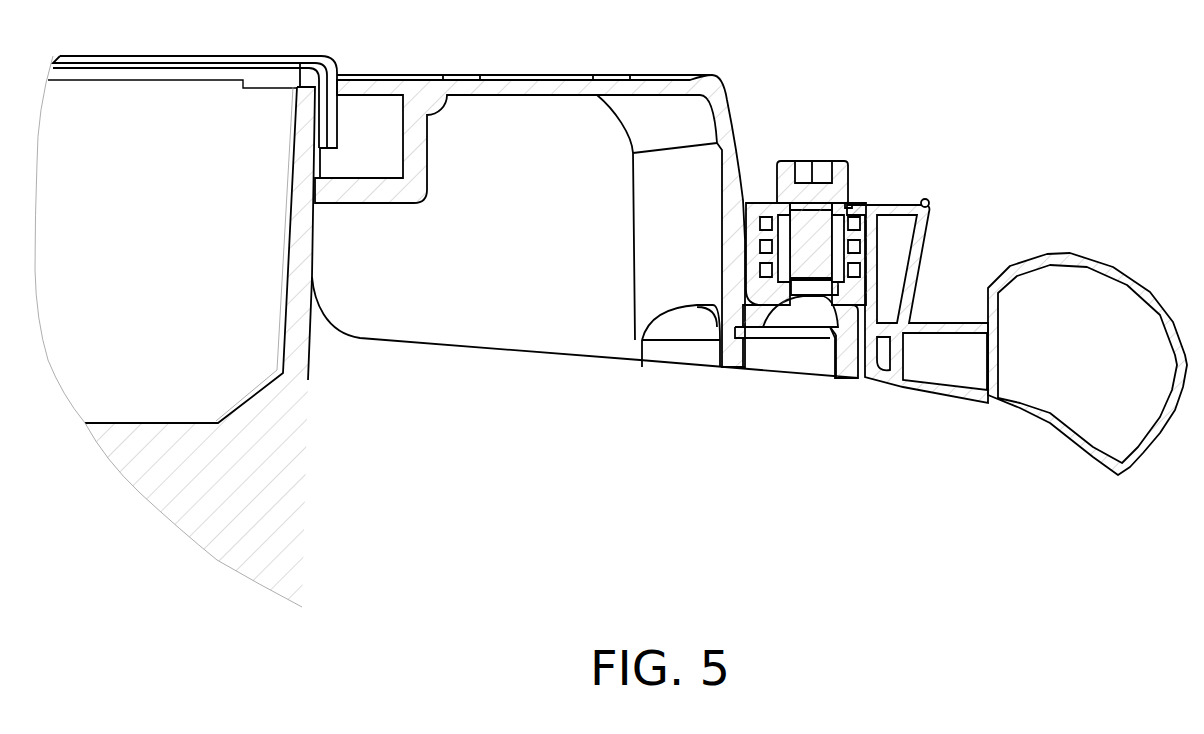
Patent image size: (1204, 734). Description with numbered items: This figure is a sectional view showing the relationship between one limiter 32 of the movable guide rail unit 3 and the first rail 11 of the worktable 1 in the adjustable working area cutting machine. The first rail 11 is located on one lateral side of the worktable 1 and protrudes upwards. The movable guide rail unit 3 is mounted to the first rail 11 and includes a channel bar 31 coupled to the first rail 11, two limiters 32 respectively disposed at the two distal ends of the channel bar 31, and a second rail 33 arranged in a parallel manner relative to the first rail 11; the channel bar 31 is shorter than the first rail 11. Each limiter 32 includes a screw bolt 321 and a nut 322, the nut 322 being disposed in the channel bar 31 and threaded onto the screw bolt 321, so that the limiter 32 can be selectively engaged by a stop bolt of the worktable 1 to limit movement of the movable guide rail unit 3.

The worktable 1 is at (602, 314).
The first rail 11 is at (810, 290).
The movable guide rail unit 3 is at (1018, 266).
The channel bar 31 is at (877, 295).
The limiter 32 is at (817, 155).
The screw bolt 321 is at (808, 200).
The nut 322 is at (783, 240).
The second rail 33 is at (1157, 288).